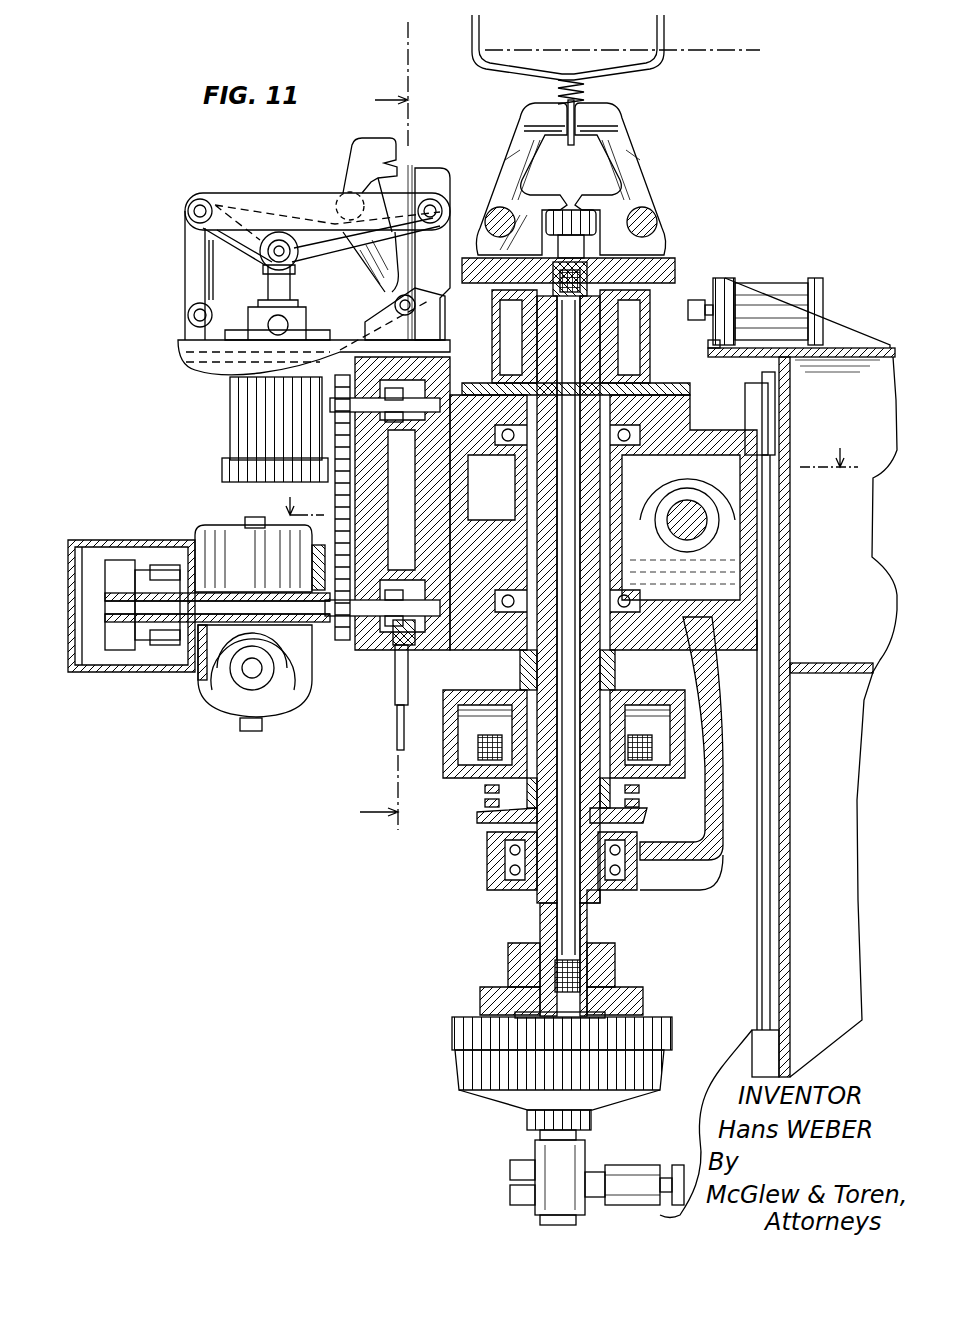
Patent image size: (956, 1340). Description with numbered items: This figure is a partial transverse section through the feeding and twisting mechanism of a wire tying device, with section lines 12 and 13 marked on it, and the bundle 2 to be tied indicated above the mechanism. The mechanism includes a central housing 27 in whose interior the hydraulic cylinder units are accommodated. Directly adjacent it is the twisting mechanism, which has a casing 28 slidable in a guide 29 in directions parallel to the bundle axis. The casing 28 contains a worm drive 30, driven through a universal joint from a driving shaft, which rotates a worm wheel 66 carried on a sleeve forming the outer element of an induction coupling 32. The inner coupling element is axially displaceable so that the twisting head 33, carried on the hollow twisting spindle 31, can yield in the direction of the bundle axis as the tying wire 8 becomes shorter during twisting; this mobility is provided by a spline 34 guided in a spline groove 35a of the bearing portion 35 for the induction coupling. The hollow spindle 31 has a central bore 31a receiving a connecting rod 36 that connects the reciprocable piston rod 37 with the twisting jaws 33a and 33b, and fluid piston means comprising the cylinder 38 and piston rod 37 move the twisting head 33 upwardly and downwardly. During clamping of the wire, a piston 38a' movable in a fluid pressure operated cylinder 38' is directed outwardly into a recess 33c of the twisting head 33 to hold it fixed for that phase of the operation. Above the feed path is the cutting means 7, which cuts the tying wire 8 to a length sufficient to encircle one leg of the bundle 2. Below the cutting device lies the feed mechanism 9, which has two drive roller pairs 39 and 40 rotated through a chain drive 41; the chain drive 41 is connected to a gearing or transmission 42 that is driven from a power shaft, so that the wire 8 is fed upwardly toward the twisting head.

The bundle 2 is at (710, 50).
The cutting means 7 is at (316, 182).
The tying wire 8 is at (584, 92).
The feed mechanism 9 is at (370, 674).
The section line 12- 12 is at (402, 426).
The section line 13- 13 is at (556, 481).
The central housing 27 is at (842, 372).
The casing 28 is at (722, 850).
The guide 29 is at (780, 628).
The worm drive 30 is at (690, 478).
The hollow twisting spindle 31 is at (545, 904).
The central bore 31a is at (545, 868).
The induction coupling 32 is at (478, 746).
The twisting head 33 is at (676, 199).
The twisting jaw 33a is at (632, 160).
The twisting jaw 33b is at (515, 150).
The recess 33c is at (652, 338).
The spline 34 is at (612, 800).
The bearing portion 35 is at (490, 825).
The spline groove 35a is at (592, 896).
The connecting rod 36 is at (615, 953).
The piston rod 37 is at (538, 1004).
The cylinder 38 is at (542, 1121).
The fluid pressure operated cylinder 38' is at (768, 293).
The piston 38a' is at (712, 280).
The drive roller pair 39 is at (408, 503).
The drive roller pair 40 is at (410, 645).
The chain drive 41 is at (332, 446).
The gearing or transmission 42 is at (242, 690).
The worm wheel 66 is at (660, 500).